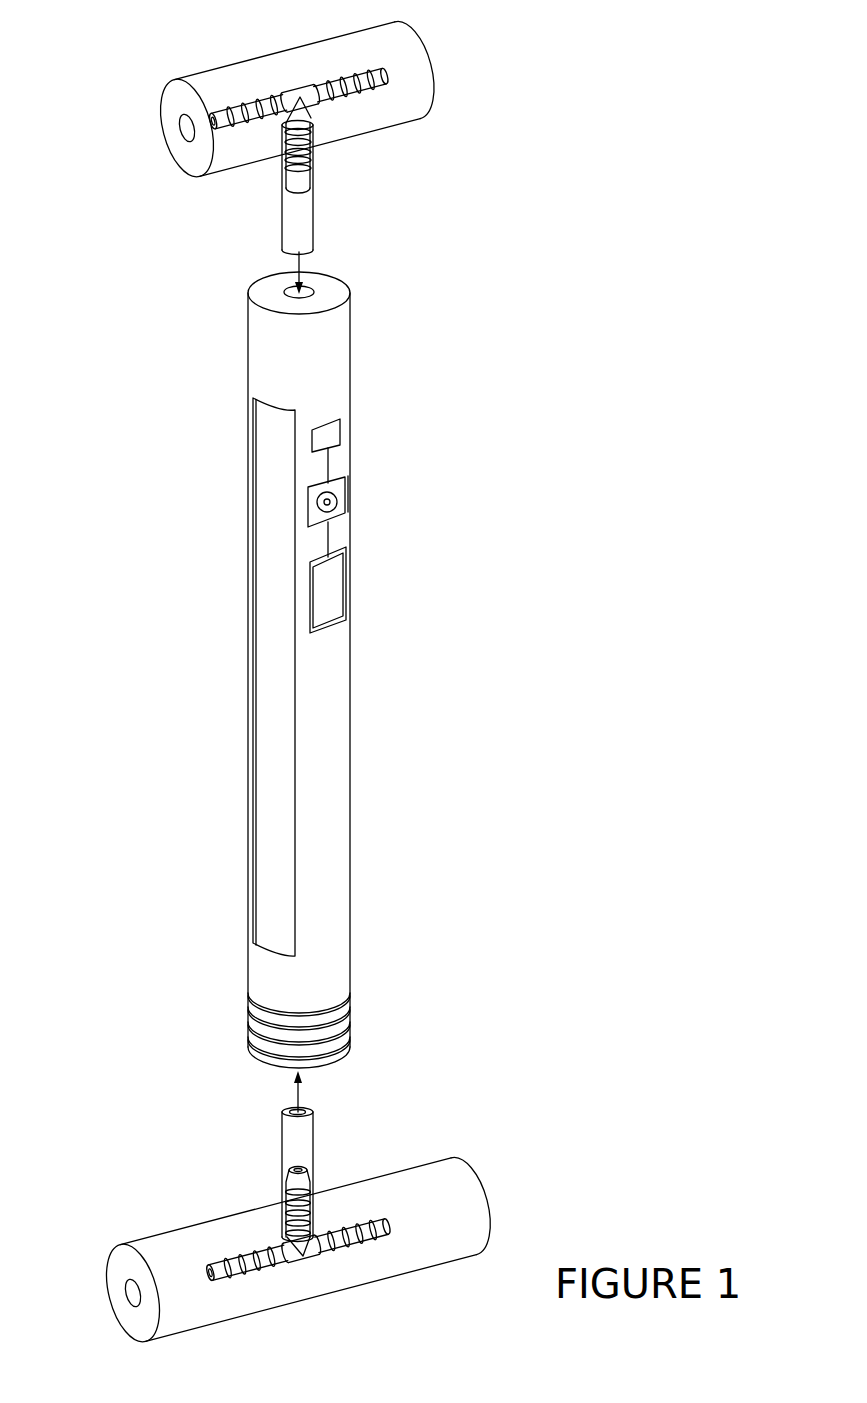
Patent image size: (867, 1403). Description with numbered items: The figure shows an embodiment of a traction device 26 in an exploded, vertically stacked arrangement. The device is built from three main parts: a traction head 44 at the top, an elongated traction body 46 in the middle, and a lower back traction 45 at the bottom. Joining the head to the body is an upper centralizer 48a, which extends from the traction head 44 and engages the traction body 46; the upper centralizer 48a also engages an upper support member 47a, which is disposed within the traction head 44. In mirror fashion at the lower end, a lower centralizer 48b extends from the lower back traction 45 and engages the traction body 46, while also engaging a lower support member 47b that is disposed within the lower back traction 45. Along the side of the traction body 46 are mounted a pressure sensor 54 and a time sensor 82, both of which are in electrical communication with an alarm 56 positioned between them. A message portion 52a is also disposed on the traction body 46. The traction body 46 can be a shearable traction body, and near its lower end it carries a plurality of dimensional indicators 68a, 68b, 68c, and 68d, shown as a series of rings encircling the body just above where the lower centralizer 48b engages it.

The traction device 26 is at (181, 50).
The traction head 44 is at (170, 117).
The lower back traction 45 is at (113, 1282).
The traction body 46 is at (338, 810).
The upper support member 47a is at (310, 92).
The lower support member 47b is at (320, 1252).
The upper centralizer 48a is at (305, 212).
The lower centralizer 48b is at (305, 1142).
The message portion 52a is at (262, 636).
The pressure sensor 54 is at (340, 602).
The alarm 56 is at (345, 512).
The time sensor 82 is at (333, 440).
The dimensional indicator 68a is at (258, 1048).
The dimensional indicator 68b is at (343, 1033).
The dimensional indicator 68c is at (258, 1020).
The dimensional indicator 68d is at (343, 1004).